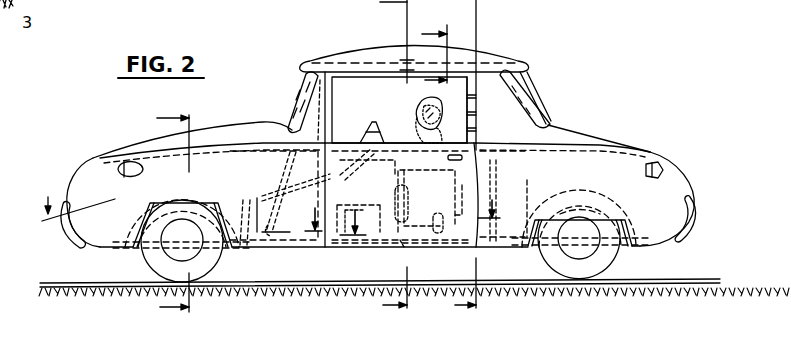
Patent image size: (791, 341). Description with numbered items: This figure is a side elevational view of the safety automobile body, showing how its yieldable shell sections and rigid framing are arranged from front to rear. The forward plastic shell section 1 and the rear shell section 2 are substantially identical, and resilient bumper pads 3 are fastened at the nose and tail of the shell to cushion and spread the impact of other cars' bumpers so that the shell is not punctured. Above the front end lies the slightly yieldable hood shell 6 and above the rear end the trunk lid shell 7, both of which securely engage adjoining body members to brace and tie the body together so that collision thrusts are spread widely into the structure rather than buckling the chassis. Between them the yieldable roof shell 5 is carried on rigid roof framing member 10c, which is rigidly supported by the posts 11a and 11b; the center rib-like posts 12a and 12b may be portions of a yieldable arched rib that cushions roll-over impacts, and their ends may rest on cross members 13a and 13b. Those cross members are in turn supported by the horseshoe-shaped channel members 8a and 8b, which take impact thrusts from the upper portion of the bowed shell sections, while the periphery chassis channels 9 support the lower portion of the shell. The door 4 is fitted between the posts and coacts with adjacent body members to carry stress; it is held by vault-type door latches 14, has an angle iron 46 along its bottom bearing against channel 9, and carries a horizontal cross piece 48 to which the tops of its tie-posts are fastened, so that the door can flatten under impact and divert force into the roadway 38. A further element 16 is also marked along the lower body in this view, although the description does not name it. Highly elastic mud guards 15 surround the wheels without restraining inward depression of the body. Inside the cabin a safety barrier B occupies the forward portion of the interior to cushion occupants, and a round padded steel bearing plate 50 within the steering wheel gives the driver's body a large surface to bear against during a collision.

The forward plastic shell section 1 is at (77, 173).
The rear shell section 2 is at (689, 184).
The resilient bumper pads 3 is at (70, 237).
The door 4 is at (424, 250).
The roof shell 5 is at (515, 48).
The hood shell 6 is at (207, 132).
The trunk lid shell 7 is at (611, 126).
The channel member 8a is at (150, 144).
The channel member 8b is at (630, 147).
The channels 9 is at (507, 229).
The rigid roof framing member 10c is at (362, 60).
The post 11a is at (298, 92).
The post 11b is at (480, 161).
The center rib-like post 12a is at (287, 107).
The center rib-like post 12b is at (540, 96).
The cross member 13a is at (270, 141).
The cross member 13b is at (562, 131).
The door latches 14 is at (377, 195).
The mud guards 15 is at (213, 190).
The side sill 16 is at (405, 216).
The roadway 38 is at (679, 278).
The angle iron 46 is at (397, 248).
The horizontal cross piece 48 is at (323, 179).
The round padded steel bearing plate 50 is at (378, 136).
The safety barrier B is at (416, 106).